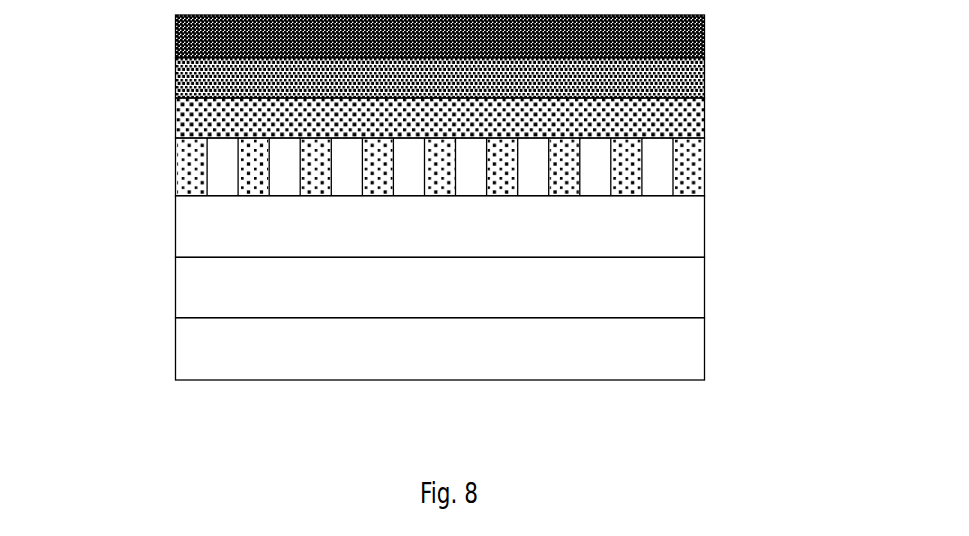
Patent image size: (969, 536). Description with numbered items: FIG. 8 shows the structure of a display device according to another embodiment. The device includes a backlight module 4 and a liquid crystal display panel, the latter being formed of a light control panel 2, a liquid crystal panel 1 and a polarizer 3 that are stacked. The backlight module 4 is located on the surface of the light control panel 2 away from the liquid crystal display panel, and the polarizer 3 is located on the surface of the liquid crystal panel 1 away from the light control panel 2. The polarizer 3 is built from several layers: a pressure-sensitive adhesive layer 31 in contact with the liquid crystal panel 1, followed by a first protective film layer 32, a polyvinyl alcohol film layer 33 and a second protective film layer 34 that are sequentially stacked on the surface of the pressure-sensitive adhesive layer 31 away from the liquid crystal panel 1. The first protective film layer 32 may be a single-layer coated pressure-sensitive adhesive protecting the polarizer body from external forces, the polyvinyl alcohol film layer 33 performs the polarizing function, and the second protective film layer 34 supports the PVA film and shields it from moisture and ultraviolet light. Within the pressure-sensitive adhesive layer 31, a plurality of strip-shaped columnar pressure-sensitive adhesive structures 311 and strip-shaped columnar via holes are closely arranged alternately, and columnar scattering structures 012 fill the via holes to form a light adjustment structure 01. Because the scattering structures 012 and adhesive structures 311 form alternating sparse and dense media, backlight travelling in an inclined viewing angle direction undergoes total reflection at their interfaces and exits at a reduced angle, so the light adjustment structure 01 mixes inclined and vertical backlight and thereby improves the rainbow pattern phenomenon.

The liquid crystal panel 1 is at (675, 227).
The light control panel 2 is at (673, 287).
The backlight module 4 is at (672, 348).
The polarizer 3 is at (450, 107).
The pressure-sensitive adhesive layer 31 is at (706, 164).
The first protective film layer 32 is at (704, 119).
The polyvinyl alcohol film layer 33 is at (704, 78).
The second protective film layer 34 is at (704, 36).
The strip-shaped columnar pressure-sensitive adhesive structure 311 is at (190, 158).
The columnar scattering structure 012 is at (218, 162).
The light adjustment structure 01 is at (80, 152).